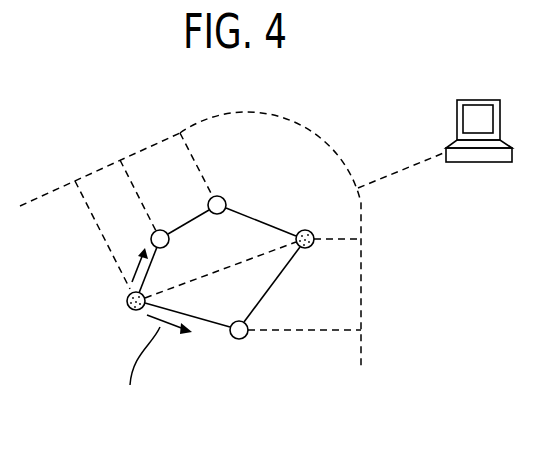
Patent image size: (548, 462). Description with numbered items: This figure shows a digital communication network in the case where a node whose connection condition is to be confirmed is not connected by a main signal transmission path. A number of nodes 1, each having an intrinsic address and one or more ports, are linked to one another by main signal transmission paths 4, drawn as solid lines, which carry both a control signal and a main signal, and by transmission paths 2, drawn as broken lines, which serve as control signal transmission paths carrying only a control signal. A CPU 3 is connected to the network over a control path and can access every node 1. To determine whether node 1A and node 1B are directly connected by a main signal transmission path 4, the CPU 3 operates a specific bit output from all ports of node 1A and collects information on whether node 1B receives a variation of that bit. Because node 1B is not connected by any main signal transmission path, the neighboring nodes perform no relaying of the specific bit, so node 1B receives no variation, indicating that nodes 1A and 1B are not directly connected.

The node 1 is at (169, 241).
The node 1A is at (138, 345).
The node 1B is at (302, 229).
The transmission path 2 is at (362, 355).
The CPU 3 is at (475, 100).
The main signal transmission path 4 is at (285, 270).